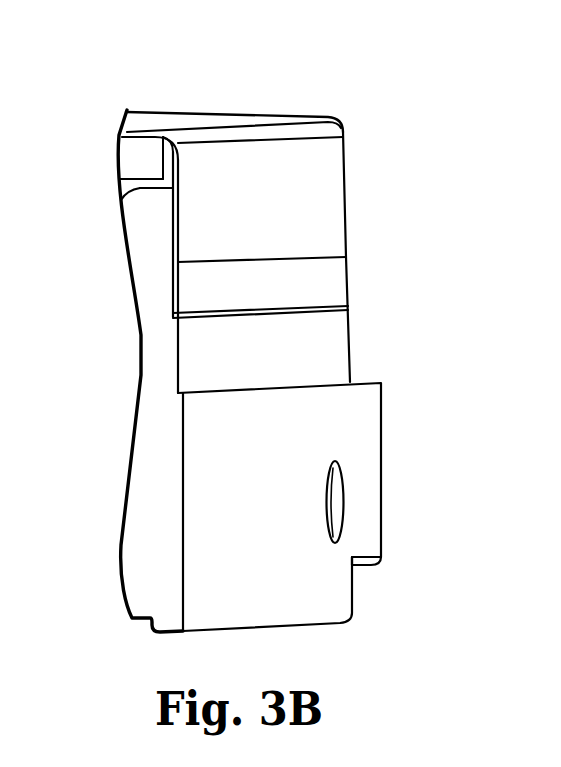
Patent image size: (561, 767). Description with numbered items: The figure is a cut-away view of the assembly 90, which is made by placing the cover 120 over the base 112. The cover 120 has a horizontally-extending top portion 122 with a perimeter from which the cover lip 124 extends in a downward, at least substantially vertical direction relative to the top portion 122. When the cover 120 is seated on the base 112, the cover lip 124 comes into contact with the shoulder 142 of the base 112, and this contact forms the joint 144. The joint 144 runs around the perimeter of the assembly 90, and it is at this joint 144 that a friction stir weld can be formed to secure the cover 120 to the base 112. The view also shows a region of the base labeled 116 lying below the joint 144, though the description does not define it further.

The assembly 90 is at (345, 72).
The base 112 is at (362, 412).
The body portion 116 is at (317, 356).
The cover 120 is at (263, 122).
The horizontally-extending top portion 122 is at (162, 112).
The cover lip 124 is at (322, 177).
The shoulder 142 is at (364, 283).
The joint 144 is at (350, 304).